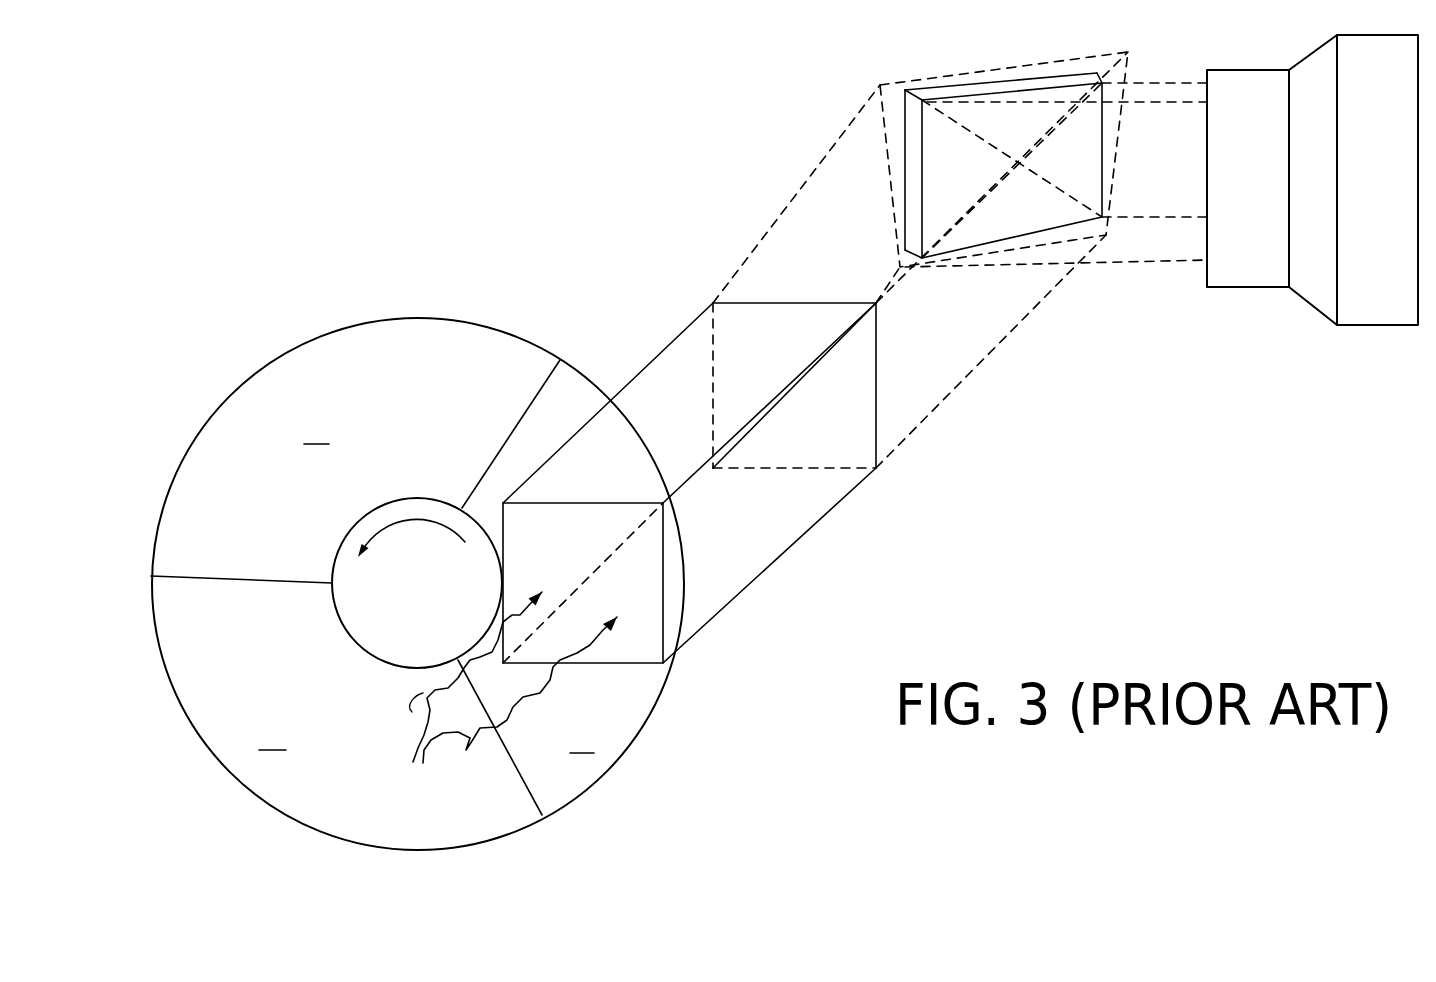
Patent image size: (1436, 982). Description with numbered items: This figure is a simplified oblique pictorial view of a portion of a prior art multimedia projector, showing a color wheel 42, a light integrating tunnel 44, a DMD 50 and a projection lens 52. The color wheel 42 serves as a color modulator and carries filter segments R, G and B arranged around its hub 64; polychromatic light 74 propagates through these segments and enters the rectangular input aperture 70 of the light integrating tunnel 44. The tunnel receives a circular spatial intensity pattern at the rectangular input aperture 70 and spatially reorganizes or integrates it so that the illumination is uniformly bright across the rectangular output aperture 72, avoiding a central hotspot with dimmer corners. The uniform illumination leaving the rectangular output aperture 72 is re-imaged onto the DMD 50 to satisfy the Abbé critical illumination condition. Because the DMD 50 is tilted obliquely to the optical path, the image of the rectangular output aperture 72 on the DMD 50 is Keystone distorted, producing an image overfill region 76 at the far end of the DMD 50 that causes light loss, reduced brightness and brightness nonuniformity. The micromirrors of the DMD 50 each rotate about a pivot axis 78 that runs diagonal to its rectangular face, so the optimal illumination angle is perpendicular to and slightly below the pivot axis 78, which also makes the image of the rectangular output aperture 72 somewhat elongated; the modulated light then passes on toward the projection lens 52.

The color wheel 42 is at (414, 282).
The hub of color wheel 64 is at (437, 602).
The light integrating tunnel 44 is at (769, 543).
The rectangular output aperture 72 is at (856, 443).
The rectangular input aperture 70 is at (643, 645).
The polychromatic light 74 is at (508, 696).
The DMD 50 is at (985, 125).
The pivot axis 78 is at (868, 70).
The image overfill region 76 is at (1118, 140).
The projection lens 52 is at (1380, 307).